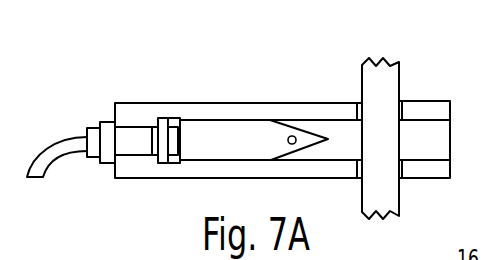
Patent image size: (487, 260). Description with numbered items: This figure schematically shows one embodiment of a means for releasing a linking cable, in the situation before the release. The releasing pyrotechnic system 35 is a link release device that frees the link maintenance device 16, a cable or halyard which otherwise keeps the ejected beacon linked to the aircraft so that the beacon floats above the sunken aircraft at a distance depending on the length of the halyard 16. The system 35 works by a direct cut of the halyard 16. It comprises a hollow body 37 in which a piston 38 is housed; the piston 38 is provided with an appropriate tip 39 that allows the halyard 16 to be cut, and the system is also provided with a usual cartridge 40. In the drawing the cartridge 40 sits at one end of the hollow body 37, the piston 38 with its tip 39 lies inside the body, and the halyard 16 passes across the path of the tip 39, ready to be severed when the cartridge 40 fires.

The link maintenance device 16 is at (392, 72).
The releasing pyrotechnic system 35 is at (217, 96).
The hollow body 37 is at (287, 110).
The piston 38 is at (215, 145).
The tip 39 is at (318, 133).
The cartridge 40 is at (132, 150).